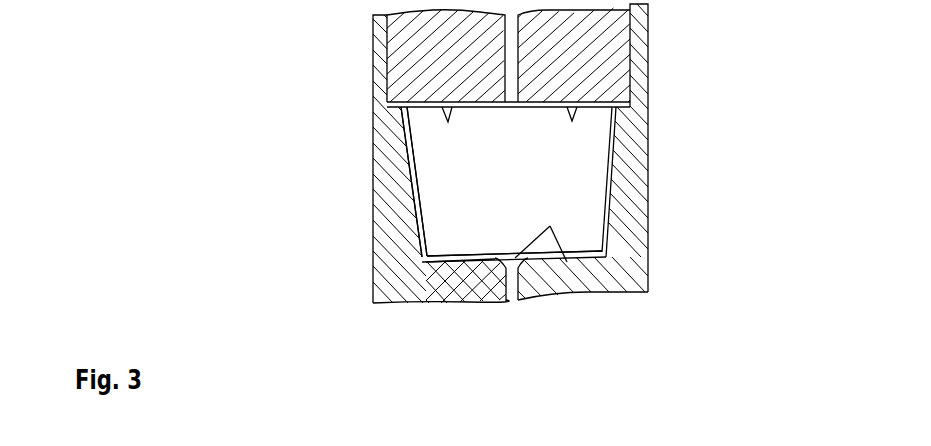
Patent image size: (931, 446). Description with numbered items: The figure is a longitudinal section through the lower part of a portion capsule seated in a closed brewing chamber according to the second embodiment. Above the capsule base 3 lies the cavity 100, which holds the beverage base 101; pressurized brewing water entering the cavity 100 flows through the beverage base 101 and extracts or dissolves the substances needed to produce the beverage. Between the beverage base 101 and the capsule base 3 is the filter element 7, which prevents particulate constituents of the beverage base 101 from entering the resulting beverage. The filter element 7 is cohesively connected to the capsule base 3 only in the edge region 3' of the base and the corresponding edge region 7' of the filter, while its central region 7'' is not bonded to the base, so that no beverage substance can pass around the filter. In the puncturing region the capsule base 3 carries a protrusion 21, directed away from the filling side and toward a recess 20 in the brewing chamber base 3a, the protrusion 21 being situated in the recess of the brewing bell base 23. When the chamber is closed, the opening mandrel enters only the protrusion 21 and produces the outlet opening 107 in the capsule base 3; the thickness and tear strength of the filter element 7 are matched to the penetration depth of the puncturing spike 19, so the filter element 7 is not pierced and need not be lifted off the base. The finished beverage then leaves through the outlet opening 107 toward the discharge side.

The cavity 100 is at (598, 223).
The beverage base 101 is at (685, 296).
The capsule base 3 is at (583, 302).
The edge region of the capsule base 3' is at (431, 171).
The brewing chamber base 3a is at (437, 253).
The filter element 7 is at (509, 227).
The edge region of the filter element 7' is at (391, 181).
The central region of the filter element 7'' is at (472, 188).
The puncturing spike 19 is at (567, 262).
The recess 20 is at (490, 275).
The protrusion 21 is at (535, 268).
The brewing bell base 23 is at (423, 300).
The outlet opening 107 is at (512, 297).